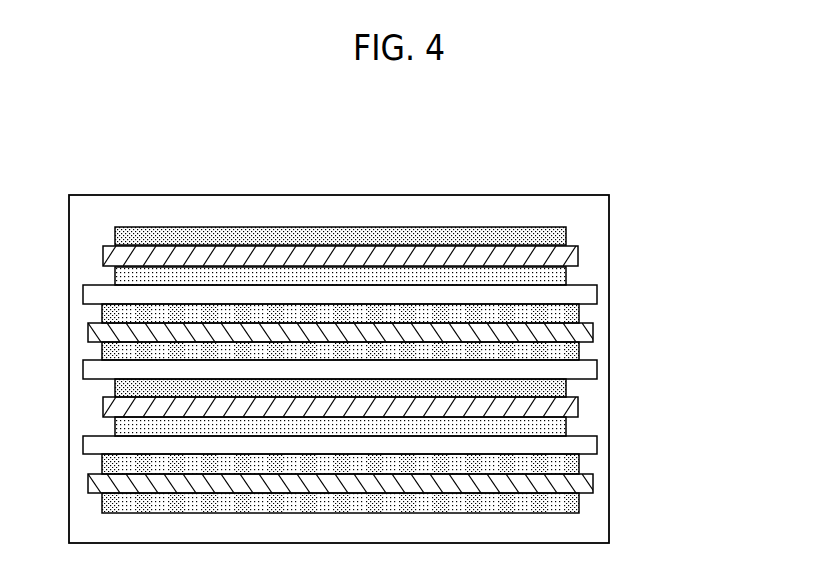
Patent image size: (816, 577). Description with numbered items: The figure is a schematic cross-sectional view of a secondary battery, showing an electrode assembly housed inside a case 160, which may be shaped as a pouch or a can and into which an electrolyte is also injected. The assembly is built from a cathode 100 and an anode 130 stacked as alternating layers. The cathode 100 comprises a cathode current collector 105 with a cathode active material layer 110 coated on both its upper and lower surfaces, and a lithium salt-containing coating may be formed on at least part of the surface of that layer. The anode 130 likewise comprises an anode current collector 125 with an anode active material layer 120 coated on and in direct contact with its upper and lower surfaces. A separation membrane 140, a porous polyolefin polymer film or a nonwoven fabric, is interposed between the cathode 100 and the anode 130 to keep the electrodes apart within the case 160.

The cathode 100 is at (414, 258).
The cathode current collector 105 is at (578, 255).
The cathode active material layer 110 is at (566, 235).
The anode active material layer 120 is at (579, 312).
The anode current collector 125 is at (593, 332).
The anode 130 is at (406, 334).
The separation membrane 140 is at (497, 292).
The case 160 is at (609, 482).